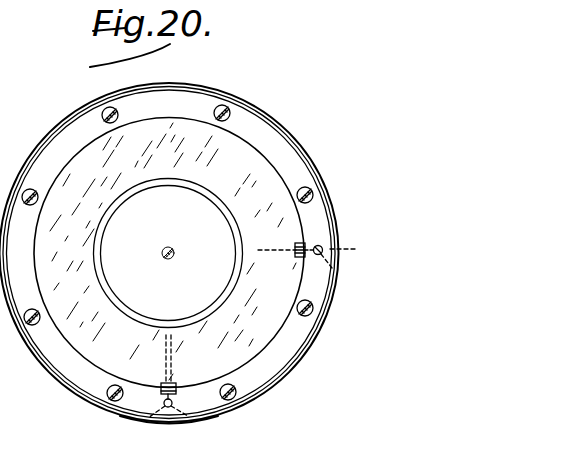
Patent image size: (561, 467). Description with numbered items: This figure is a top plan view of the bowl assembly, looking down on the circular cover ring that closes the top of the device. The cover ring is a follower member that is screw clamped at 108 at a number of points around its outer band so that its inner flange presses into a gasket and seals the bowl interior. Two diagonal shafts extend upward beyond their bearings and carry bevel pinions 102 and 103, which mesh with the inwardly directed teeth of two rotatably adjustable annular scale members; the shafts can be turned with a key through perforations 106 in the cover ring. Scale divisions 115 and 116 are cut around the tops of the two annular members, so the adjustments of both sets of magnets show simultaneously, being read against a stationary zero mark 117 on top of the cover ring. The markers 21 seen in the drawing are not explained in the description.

The section line 21 is at (281, 246).
The bevel pinion 102 is at (197, 414).
The bevel pinion 103 is at (332, 280).
The perforations 106 is at (319, 246).
The screw clamp 108 is at (232, 111).
The scale divisions 115 is at (322, 331).
The scale divisions 116 is at (313, 337).
The stationary zero mark 117 is at (289, 357).